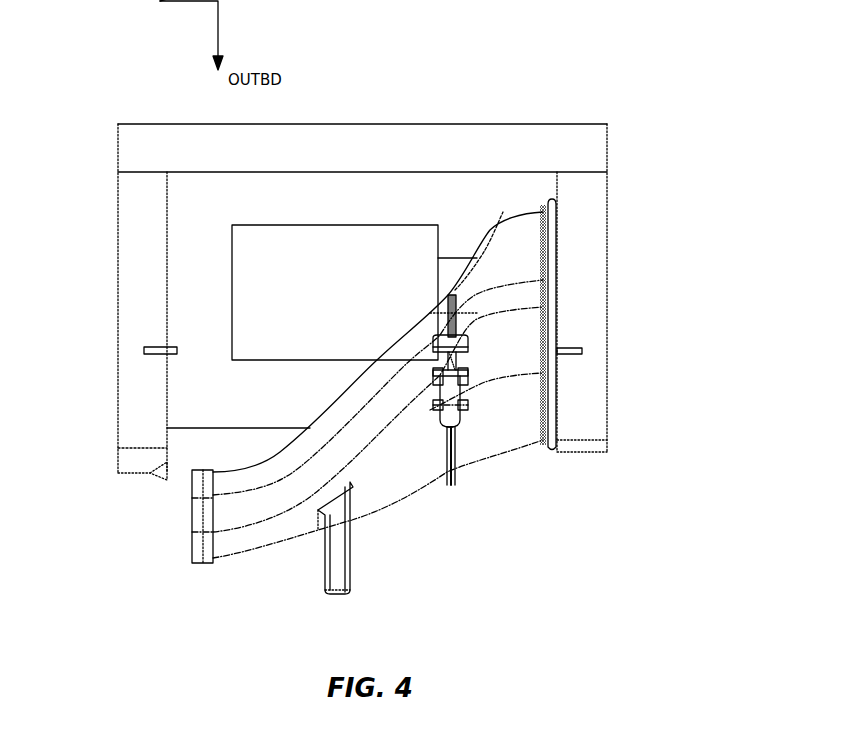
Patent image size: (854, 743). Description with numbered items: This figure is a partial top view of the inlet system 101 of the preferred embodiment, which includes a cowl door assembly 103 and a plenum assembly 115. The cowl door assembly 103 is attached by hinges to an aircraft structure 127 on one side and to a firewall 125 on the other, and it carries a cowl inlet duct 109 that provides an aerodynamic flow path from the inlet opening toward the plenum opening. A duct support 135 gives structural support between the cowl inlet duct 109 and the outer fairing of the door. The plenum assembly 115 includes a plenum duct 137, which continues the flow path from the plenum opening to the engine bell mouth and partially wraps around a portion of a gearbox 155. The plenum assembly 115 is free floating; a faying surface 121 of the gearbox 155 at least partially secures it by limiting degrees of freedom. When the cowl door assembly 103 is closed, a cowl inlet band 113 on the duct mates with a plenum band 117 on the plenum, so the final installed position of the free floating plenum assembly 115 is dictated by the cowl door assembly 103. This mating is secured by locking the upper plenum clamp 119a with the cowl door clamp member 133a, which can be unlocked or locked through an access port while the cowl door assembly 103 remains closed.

The inlet system 101 is at (533, 68).
The cowl door assembly 103 is at (163, 556).
The cowl inlet duct 109 is at (238, 557).
The cowl inlet band 113 is at (448, 482).
The plenum assembly 115 is at (530, 465).
The plenum band 117 is at (452, 295).
The upper plenum clamp 119a is at (467, 408).
The faying surface 121 is at (477, 258).
The firewall 125 is at (607, 236).
The aircraft structure 127 is at (117, 354).
The cowl door clamp member 133a is at (437, 370).
The duct support 135 is at (322, 578).
The plenum duct 137 is at (470, 466).
The gearbox 155 is at (283, 226).